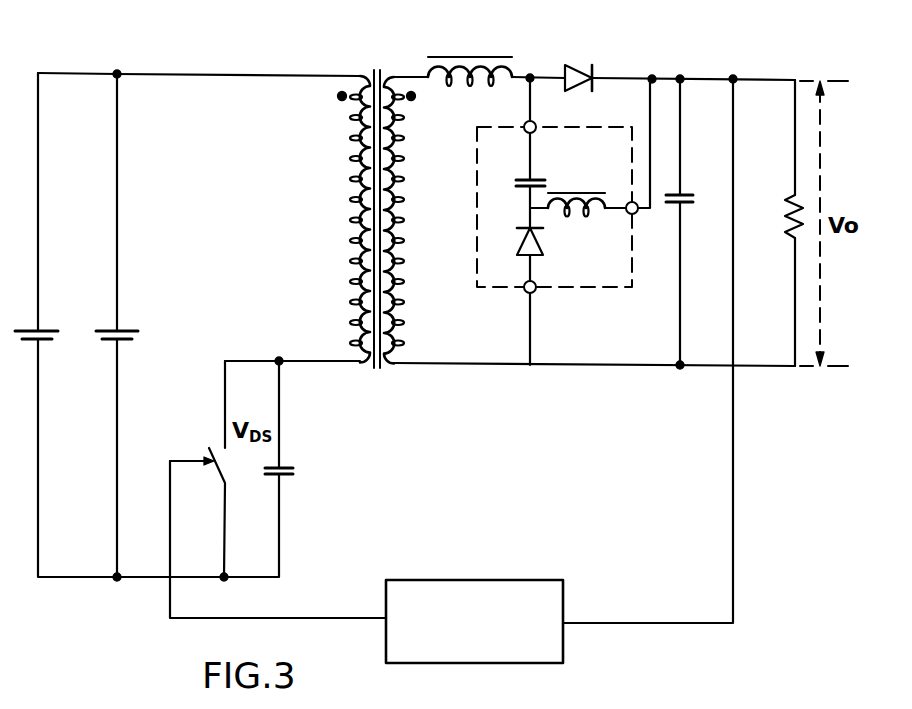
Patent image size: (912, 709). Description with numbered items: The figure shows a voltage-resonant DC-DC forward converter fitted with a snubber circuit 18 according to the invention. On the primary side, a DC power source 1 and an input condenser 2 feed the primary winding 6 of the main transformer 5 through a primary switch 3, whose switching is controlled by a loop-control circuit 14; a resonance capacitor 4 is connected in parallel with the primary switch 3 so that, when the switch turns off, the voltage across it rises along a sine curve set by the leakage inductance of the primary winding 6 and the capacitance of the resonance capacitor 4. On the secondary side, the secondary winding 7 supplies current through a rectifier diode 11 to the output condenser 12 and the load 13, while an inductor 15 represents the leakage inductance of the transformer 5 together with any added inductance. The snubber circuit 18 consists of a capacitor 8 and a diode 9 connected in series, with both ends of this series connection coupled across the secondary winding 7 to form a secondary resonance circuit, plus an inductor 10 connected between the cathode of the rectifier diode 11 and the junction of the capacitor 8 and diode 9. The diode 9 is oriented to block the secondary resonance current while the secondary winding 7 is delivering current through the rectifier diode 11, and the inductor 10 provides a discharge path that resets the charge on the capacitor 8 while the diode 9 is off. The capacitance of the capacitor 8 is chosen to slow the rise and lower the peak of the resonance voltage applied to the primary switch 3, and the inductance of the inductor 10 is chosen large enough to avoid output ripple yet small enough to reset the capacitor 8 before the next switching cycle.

The DC power source 1 is at (40, 329).
The input condenser 2 is at (119, 329).
The primary switch 3 is at (216, 445).
The resonance capacitor 4 is at (294, 475).
The transformer 5 is at (378, 70).
The primary winding 6 is at (355, 210).
The secondary winding 7 is at (396, 217).
The capacitor 8 is at (538, 179).
The diode 9 is at (537, 254).
The inductor 10 is at (566, 214).
The rectifier diode 11 is at (574, 68).
The output condenser 12 is at (682, 193).
The load 13 is at (792, 200).
The loop-control circuit 14 is at (460, 579).
The inductor 15 is at (470, 56).
The snubber circuit 18 is at (536, 292).